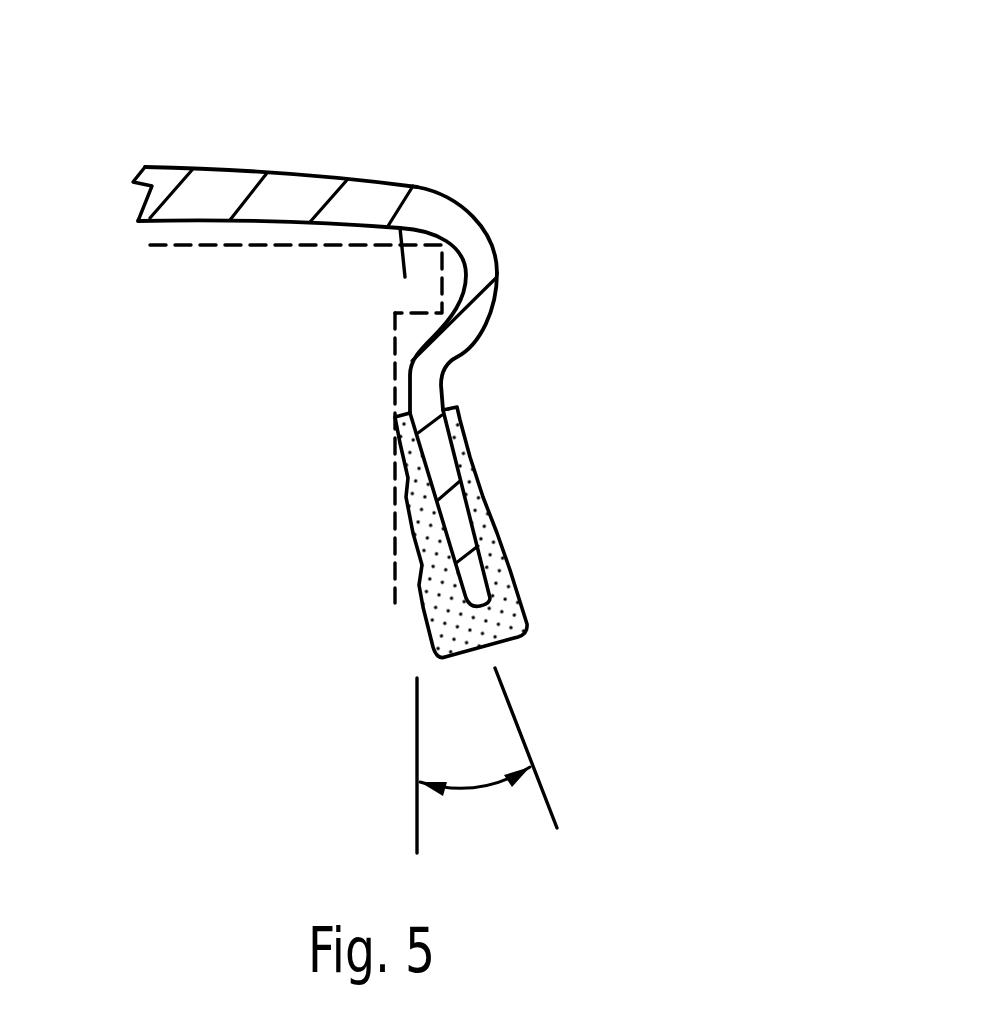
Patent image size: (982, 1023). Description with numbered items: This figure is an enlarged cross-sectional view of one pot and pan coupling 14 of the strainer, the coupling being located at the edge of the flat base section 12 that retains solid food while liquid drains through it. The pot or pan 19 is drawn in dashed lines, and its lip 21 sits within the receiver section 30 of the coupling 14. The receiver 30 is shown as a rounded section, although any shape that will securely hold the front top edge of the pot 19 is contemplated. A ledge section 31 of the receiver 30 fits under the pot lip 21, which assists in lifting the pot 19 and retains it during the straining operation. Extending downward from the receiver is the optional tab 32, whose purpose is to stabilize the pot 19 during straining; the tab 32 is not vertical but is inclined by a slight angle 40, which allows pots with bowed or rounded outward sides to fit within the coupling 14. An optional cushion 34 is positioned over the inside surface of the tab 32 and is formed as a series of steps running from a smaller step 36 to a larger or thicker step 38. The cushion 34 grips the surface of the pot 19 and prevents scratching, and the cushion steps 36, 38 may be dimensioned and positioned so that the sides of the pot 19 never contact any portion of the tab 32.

The base section 12 is at (247, 173).
The coupling 14 is at (600, 257).
The pot or pan 19 is at (227, 245).
The lip 21 is at (390, 228).
The receiver section 30 is at (482, 228).
The ledge section 31 is at (460, 353).
The tab 32 is at (480, 587).
The cushion 34 is at (500, 495).
The smaller step 36 is at (382, 480).
The larger step 38 is at (430, 632).
The angle 40 is at (487, 765).